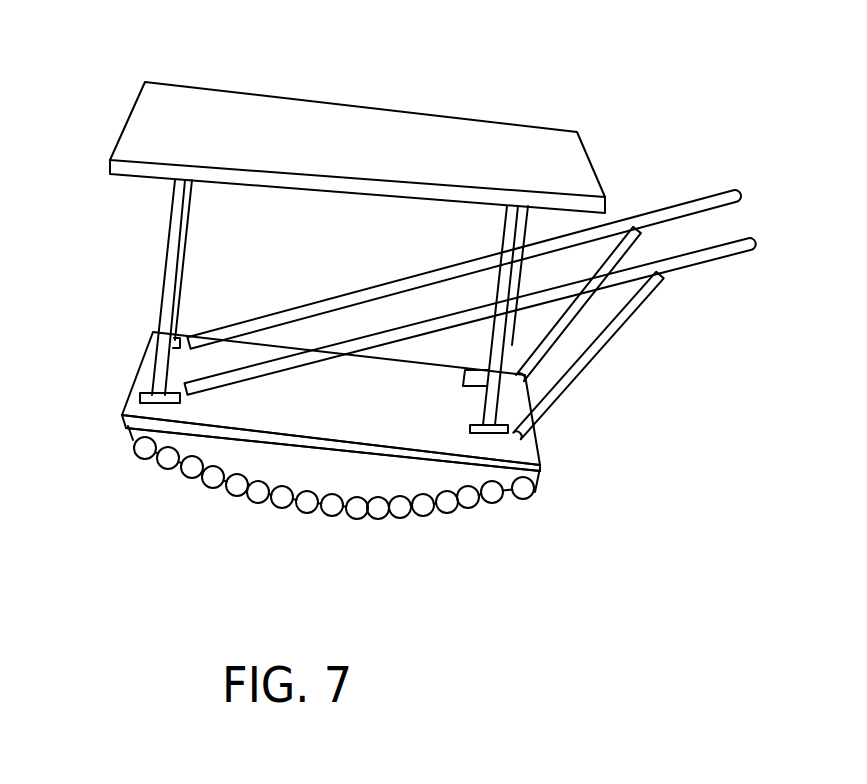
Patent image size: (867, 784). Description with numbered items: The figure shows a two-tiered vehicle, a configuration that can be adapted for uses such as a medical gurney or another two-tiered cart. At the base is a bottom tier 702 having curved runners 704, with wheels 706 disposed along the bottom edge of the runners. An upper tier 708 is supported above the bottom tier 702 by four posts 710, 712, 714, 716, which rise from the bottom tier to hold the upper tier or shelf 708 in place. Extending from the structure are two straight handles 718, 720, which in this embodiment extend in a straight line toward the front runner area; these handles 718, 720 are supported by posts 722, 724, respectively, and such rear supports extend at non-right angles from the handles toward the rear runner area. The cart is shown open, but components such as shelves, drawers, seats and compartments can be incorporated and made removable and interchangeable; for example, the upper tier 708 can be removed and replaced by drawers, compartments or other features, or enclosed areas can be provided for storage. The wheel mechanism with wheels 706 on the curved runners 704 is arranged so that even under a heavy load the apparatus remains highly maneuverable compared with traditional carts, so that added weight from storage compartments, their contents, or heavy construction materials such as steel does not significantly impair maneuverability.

The bottom tier 702 is at (143, 378).
The curved runners 704 is at (510, 480).
The wheels 706 is at (230, 486).
The upper tier 708 is at (215, 105).
The post 710 is at (173, 262).
The post 712 is at (189, 210).
The post 714 is at (510, 223).
The post 716 is at (523, 237).
The handle 718 is at (660, 207).
The handle 720 is at (730, 240).
The post 722 is at (628, 254).
The post 724 is at (622, 316).